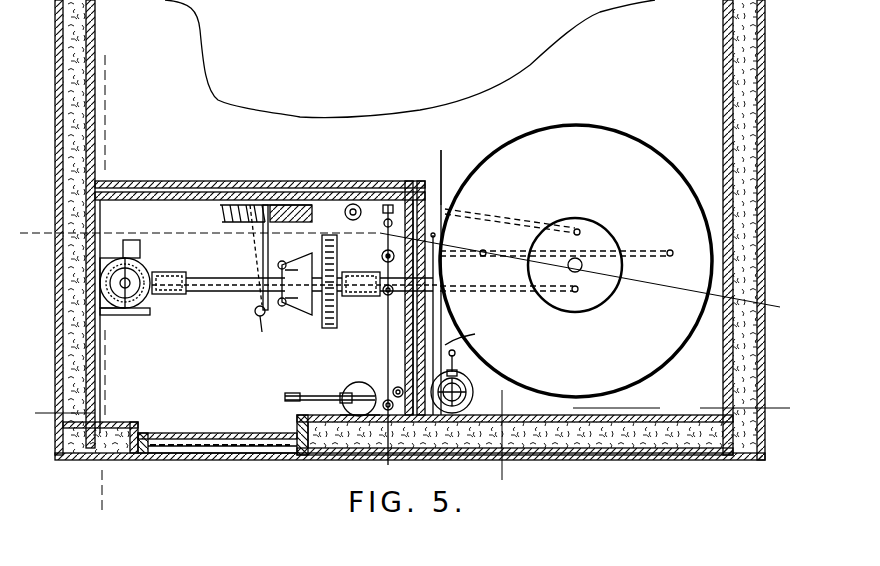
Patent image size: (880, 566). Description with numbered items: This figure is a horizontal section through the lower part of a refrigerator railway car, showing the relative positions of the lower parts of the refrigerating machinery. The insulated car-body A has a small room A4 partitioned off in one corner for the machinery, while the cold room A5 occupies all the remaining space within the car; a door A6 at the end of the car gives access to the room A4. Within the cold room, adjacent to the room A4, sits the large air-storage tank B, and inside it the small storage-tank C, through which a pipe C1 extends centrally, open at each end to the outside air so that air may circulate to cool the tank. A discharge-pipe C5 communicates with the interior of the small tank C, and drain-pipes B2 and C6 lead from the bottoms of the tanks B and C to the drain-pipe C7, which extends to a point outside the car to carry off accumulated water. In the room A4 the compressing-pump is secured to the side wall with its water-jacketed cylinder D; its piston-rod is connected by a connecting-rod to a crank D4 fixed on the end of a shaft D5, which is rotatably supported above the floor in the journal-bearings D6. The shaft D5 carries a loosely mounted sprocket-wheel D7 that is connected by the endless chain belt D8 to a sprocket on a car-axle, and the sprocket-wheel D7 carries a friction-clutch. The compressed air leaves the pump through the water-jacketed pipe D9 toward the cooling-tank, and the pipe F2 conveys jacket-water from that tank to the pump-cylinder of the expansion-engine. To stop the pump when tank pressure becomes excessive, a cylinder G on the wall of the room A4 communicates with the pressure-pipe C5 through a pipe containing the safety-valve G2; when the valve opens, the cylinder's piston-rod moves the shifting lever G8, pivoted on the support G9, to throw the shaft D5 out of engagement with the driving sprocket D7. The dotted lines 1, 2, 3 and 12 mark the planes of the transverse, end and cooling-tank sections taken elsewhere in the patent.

The car-body A is at (410, 230).
The small room A4 is at (260, 307).
The cold room A5 is at (595, 56).
The door A6 is at (240, 458).
The large air-storage tank B is at (576, 261).
The drain-pipe B2 is at (630, 256).
The small storage-tank C is at (578, 296).
The pipe C1 is at (582, 265).
The discharge-pipe C5 is at (480, 218).
The drain-pipe C6 is at (490, 292).
The drain-pipe C7 is at (385, 340).
The water-jacketed cylinder D is at (150, 300).
The crank D4 is at (142, 246).
The shaft D5 is at (230, 290).
The journal-bearings D6 is at (172, 272).
The sprocket-wheel D7 is at (337, 250).
The endless chain belt D8 is at (356, 382).
The pipe D9 is at (468, 375).
The pipe F2 is at (465, 334).
The cylinder G is at (290, 222).
The safety-valve G2 is at (353, 220).
The shifting lever G8 is at (268, 240).
The support G9 is at (270, 322).
The dotted line 1 1 is at (413, 410).
The dotted line 2 2 is at (788, 298).
The dotted lines 3 3 is at (95, 35).
The dotted line 12 12 is at (430, 100).